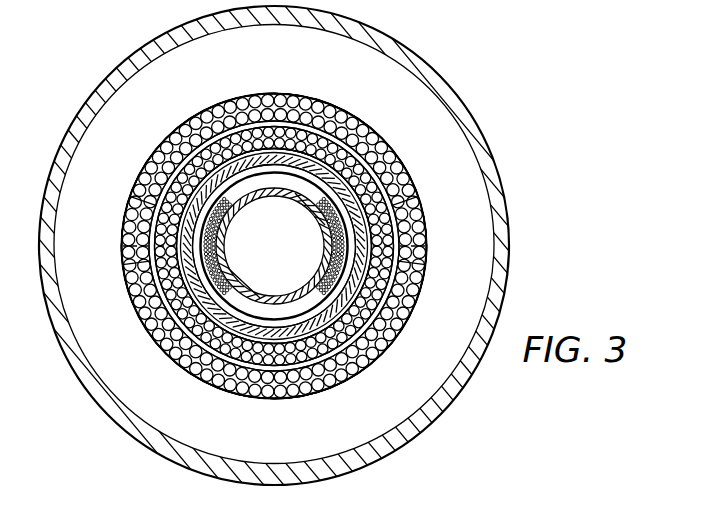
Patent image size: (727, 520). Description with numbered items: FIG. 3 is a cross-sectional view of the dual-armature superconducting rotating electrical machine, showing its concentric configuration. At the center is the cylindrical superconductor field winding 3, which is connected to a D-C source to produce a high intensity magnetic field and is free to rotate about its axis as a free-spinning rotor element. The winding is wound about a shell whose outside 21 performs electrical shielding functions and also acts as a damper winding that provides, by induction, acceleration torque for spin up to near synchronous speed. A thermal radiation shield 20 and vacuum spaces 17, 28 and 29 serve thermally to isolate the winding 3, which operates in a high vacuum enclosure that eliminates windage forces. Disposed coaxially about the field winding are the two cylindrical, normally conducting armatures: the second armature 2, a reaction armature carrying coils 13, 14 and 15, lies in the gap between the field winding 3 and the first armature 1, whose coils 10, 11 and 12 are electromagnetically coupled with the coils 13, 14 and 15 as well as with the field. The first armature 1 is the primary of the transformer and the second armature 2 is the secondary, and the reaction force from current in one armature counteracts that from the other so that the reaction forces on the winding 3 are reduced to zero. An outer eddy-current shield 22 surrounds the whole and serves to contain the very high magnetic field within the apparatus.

The first armature 1 is at (372, 162).
The second armature 2 is at (256, 122).
The superconductor field winding 3 is at (213, 238).
The coil of the first armature 10 is at (293, 98).
The coil of the first armature 11 is at (363, 128).
The coil of the first armature 12 is at (180, 145).
The coil of the second armature 13 is at (170, 263).
The coil of the second armature 14 is at (170, 217).
The coil of the second armature 15 is at (307, 130).
The vacuum space 17 is at (285, 263).
The thermal radiation shield 20 is at (350, 217).
The outside of the shell 21 is at (190, 298).
The outer eddy-current shield 22 is at (509, 231).
The vacuum space 28 is at (357, 262).
The vacuum space 29 is at (360, 290).